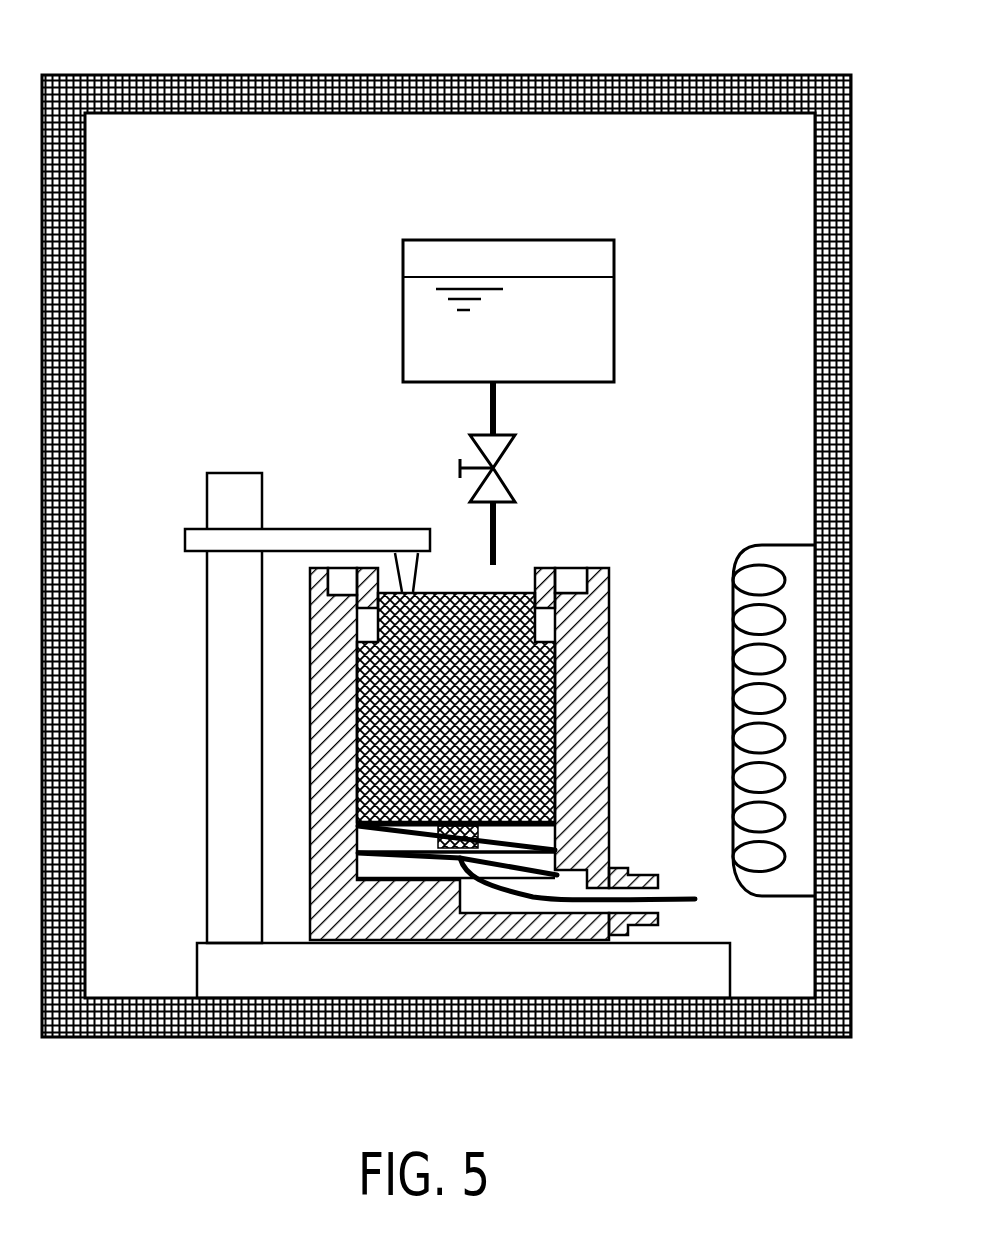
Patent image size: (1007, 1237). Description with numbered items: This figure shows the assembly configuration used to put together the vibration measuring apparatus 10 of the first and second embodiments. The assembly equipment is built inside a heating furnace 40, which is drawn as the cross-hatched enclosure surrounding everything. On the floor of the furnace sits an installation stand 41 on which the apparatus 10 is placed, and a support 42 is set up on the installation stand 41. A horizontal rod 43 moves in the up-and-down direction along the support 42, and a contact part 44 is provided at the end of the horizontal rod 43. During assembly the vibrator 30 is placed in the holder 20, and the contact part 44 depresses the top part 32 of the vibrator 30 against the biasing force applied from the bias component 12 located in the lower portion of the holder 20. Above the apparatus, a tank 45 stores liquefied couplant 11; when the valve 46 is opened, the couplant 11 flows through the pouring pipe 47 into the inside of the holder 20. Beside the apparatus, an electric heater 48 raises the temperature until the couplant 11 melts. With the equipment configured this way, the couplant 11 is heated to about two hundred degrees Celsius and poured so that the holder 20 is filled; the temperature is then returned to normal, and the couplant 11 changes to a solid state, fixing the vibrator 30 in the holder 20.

The heating furnace 40 is at (445, 75).
The tank 45 is at (613, 309).
The couplant 11 is at (568, 353).
The valve 46 is at (497, 470).
The pouring pipe 47 is at (497, 528).
The contact part 44 is at (420, 573).
The horizontal rod 43 is at (185, 540).
The support 42 is at (207, 708).
The installation stand 41 is at (197, 973).
The vibration measuring apparatus 10 is at (502, 719).
The holder 20 is at (610, 678).
The top part 32 is at (500, 590).
The vibrator 30 is at (512, 748).
The bias component 12 is at (563, 850).
The electric heater 48 is at (760, 545).